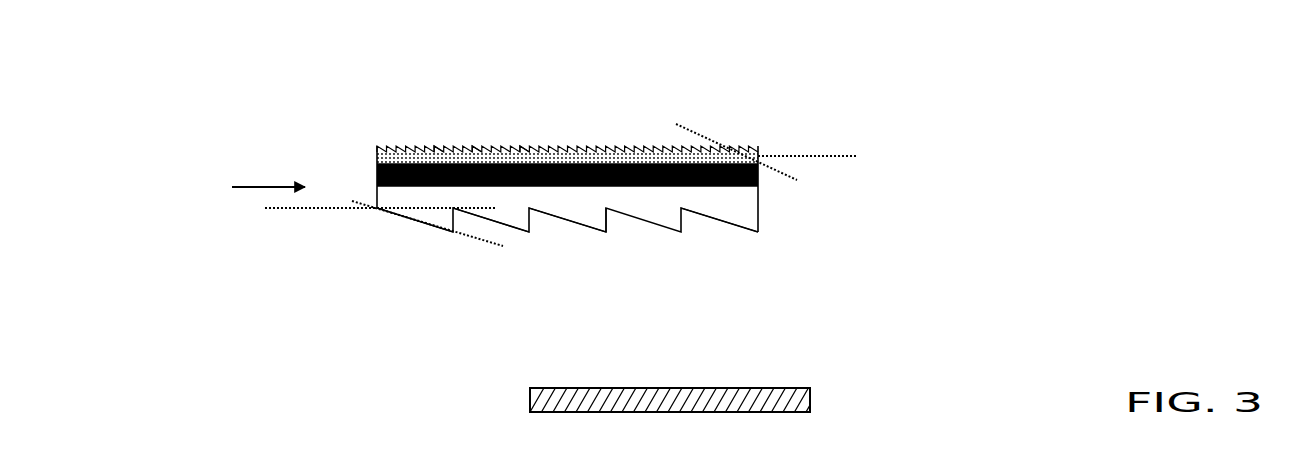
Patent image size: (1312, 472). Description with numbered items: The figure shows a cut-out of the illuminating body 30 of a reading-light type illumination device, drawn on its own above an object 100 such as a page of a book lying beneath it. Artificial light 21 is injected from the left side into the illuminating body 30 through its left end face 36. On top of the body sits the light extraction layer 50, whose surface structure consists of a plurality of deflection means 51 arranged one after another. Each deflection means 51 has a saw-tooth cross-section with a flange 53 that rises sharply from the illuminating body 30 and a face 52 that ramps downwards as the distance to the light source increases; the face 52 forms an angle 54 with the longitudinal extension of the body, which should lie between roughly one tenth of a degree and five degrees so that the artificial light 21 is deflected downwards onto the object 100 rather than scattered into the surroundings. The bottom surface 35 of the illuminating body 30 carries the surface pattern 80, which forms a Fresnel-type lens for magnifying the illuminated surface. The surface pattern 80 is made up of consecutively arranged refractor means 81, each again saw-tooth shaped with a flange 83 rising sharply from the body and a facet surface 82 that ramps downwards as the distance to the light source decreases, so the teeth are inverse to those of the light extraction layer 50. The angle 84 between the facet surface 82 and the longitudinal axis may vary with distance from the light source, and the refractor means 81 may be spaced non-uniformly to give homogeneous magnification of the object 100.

The illuminating body 30 is at (265, 82).
The artificial light 21 is at (243, 188).
The light input surface 36 is at (377, 168).
The light extraction layer 50 is at (392, 140).
The deflection means 51 is at (520, 147).
The face 52 is at (475, 147).
The flange 53 is at (435, 147).
The angle 54 is at (832, 156).
The surface pattern 80 is at (790, 234).
The refractor means 81 is at (421, 213).
The facet surface 82 is at (560, 218).
The flange 83 is at (607, 220).
The angle 84 is at (477, 228).
The bottom surface 35 is at (729, 213).
The object 100 is at (800, 398).